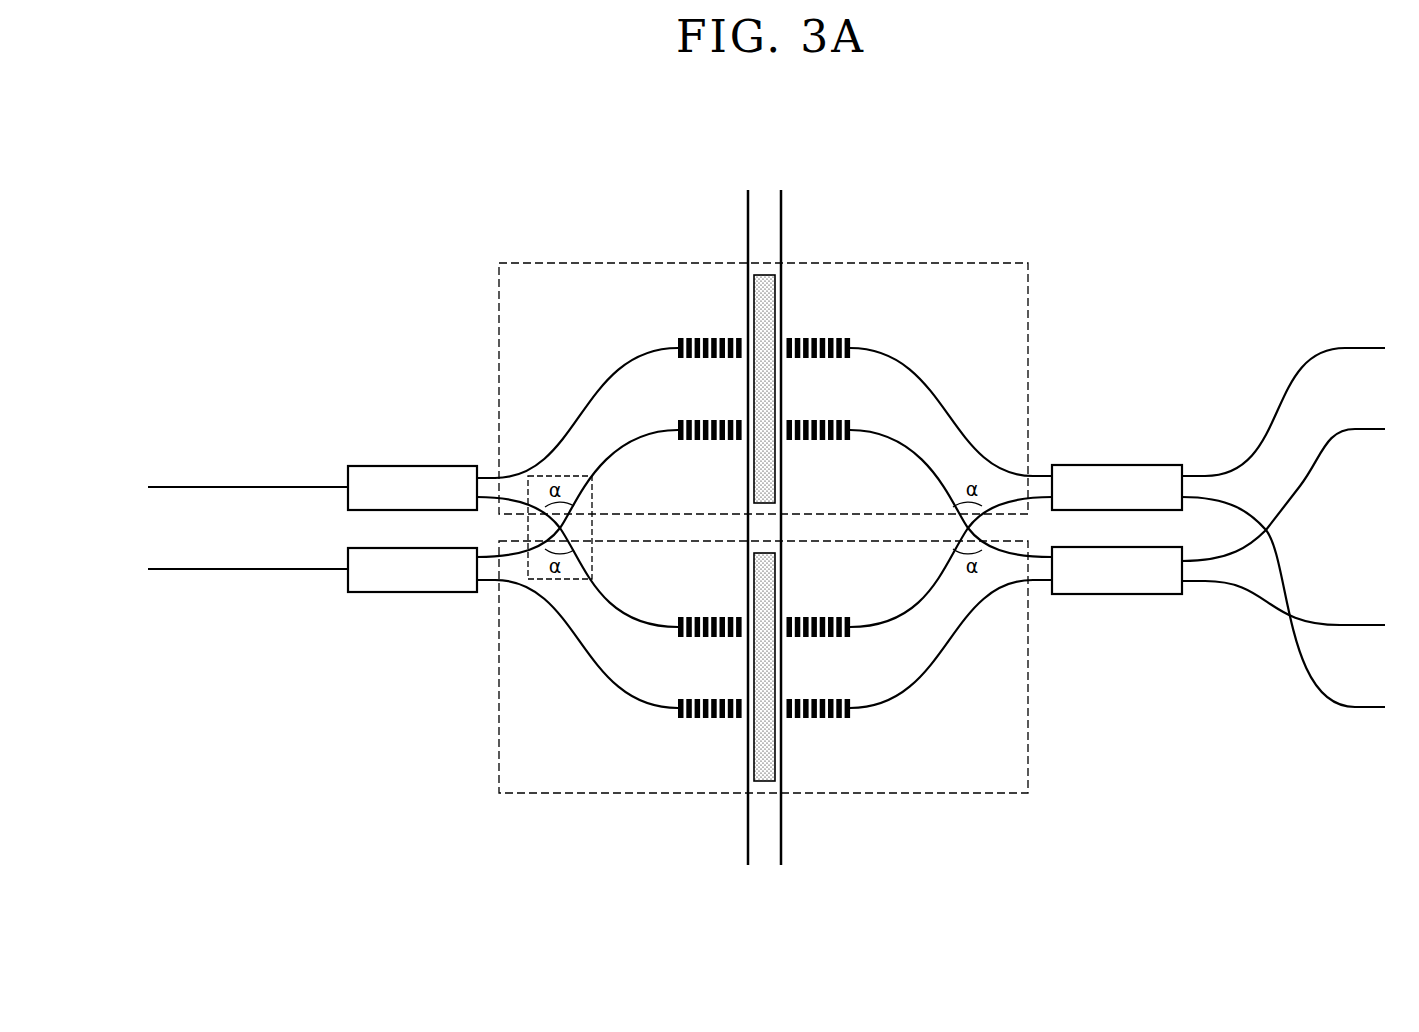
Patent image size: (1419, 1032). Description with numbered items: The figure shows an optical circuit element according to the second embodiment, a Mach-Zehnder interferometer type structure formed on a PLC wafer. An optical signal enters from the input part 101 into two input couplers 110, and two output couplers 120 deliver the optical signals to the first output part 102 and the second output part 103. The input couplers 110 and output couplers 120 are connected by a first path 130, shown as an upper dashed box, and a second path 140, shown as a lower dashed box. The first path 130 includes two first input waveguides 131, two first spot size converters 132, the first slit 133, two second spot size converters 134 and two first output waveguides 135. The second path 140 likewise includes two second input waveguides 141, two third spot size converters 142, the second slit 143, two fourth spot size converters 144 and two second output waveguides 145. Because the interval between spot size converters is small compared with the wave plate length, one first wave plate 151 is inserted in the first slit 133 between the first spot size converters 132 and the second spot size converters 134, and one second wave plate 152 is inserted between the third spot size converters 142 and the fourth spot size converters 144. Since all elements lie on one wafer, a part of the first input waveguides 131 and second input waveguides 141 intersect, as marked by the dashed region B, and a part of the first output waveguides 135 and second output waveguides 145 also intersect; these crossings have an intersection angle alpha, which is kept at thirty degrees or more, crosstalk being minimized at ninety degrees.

The input part 101 is at (246, 485).
The first output part 102 is at (1354, 345).
The second output part 103 is at (1354, 621).
The input coupler 110 is at (402, 464).
The output coupler 120 is at (1127, 463).
The first path 130 is at (962, 262).
The first input waveguide 131 is at (612, 360).
The first spot size converter 132 is at (713, 337).
The first slit 133 is at (764, 206).
The second spot size converter 134 is at (812, 337).
The first output waveguide 135 is at (912, 360).
The second path 140 is at (962, 795).
The second input waveguide 141 is at (615, 697).
The third spot size converter 142 is at (716, 721).
The second slit 143 is at (765, 854).
The fourth spot size converter 144 is at (812, 720).
The second output waveguide 145 is at (912, 698).
The first wave plate 151 is at (764, 385).
The second wave plate 152 is at (764, 665).
The waveguide crossing region B is at (592, 553).